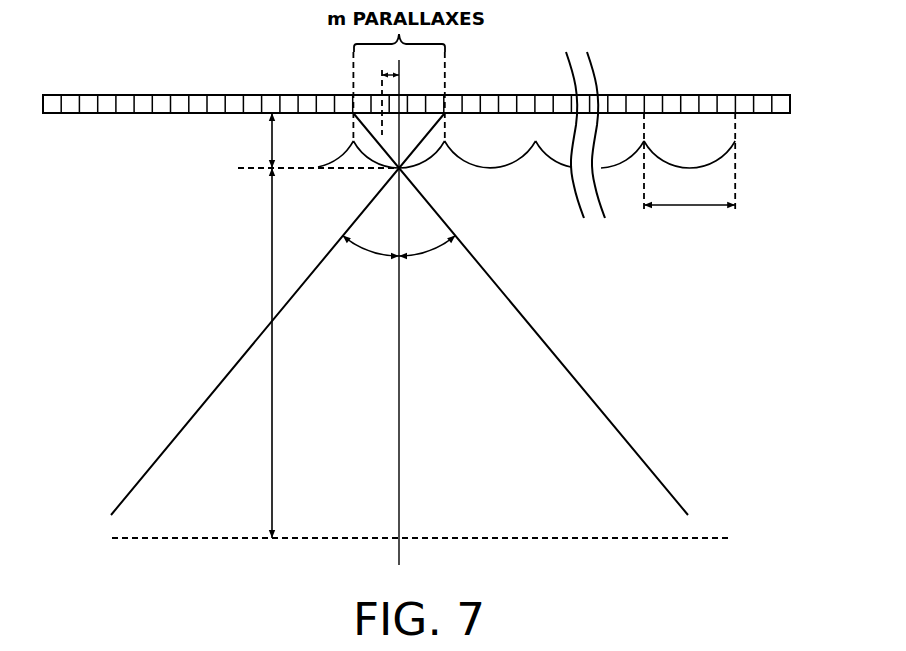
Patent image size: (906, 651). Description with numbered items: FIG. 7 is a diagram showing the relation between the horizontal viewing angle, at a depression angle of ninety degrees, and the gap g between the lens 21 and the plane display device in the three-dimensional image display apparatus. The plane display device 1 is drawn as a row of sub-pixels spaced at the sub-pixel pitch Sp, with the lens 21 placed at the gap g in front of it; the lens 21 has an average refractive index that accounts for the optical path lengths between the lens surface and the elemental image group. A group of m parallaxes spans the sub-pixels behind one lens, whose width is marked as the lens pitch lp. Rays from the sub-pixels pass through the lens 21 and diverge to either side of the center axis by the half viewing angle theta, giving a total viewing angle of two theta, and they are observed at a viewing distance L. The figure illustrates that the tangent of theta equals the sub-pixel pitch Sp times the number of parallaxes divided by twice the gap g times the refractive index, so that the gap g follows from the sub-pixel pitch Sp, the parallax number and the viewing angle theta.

The display unit (flat panel display) 1 is at (470, 100).
The lens 21 is at (513, 150).
The gap g is at (258, 140).
The viewing distance L is at (260, 353).
The viewing angle theta is at (399, 261).
The sub-pixel pitch Sp is at (391, 92).
The lens pitch lp is at (689, 163).